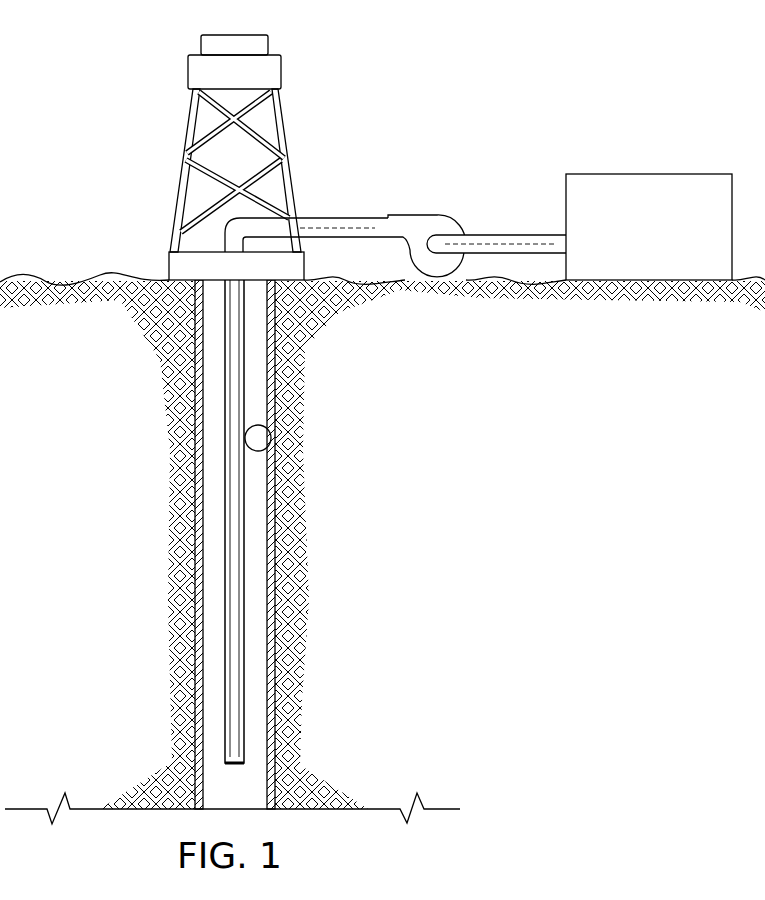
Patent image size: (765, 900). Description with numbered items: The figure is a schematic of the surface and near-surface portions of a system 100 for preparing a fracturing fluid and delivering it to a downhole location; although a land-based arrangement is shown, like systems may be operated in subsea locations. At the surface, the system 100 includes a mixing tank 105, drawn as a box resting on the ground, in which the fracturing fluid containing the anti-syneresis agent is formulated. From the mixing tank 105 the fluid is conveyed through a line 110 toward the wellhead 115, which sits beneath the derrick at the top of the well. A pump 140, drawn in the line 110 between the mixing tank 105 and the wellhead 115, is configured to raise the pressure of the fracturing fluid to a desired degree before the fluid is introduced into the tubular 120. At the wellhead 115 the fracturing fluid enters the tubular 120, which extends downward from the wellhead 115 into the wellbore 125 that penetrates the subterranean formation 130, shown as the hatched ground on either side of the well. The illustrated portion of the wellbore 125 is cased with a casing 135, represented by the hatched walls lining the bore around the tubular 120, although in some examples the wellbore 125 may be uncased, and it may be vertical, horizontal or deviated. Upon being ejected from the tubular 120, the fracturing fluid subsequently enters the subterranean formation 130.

The system 100 is at (119, 64).
The mixing tank 105 is at (651, 173).
The line 110 is at (345, 216).
The wellhead 115 is at (168, 265).
The tubular 120 is at (224, 670).
The wellbore 125 is at (275, 404).
The subterranean formation 130 is at (140, 535).
The casing 135 is at (271, 438).
The pump 140 is at (412, 215).